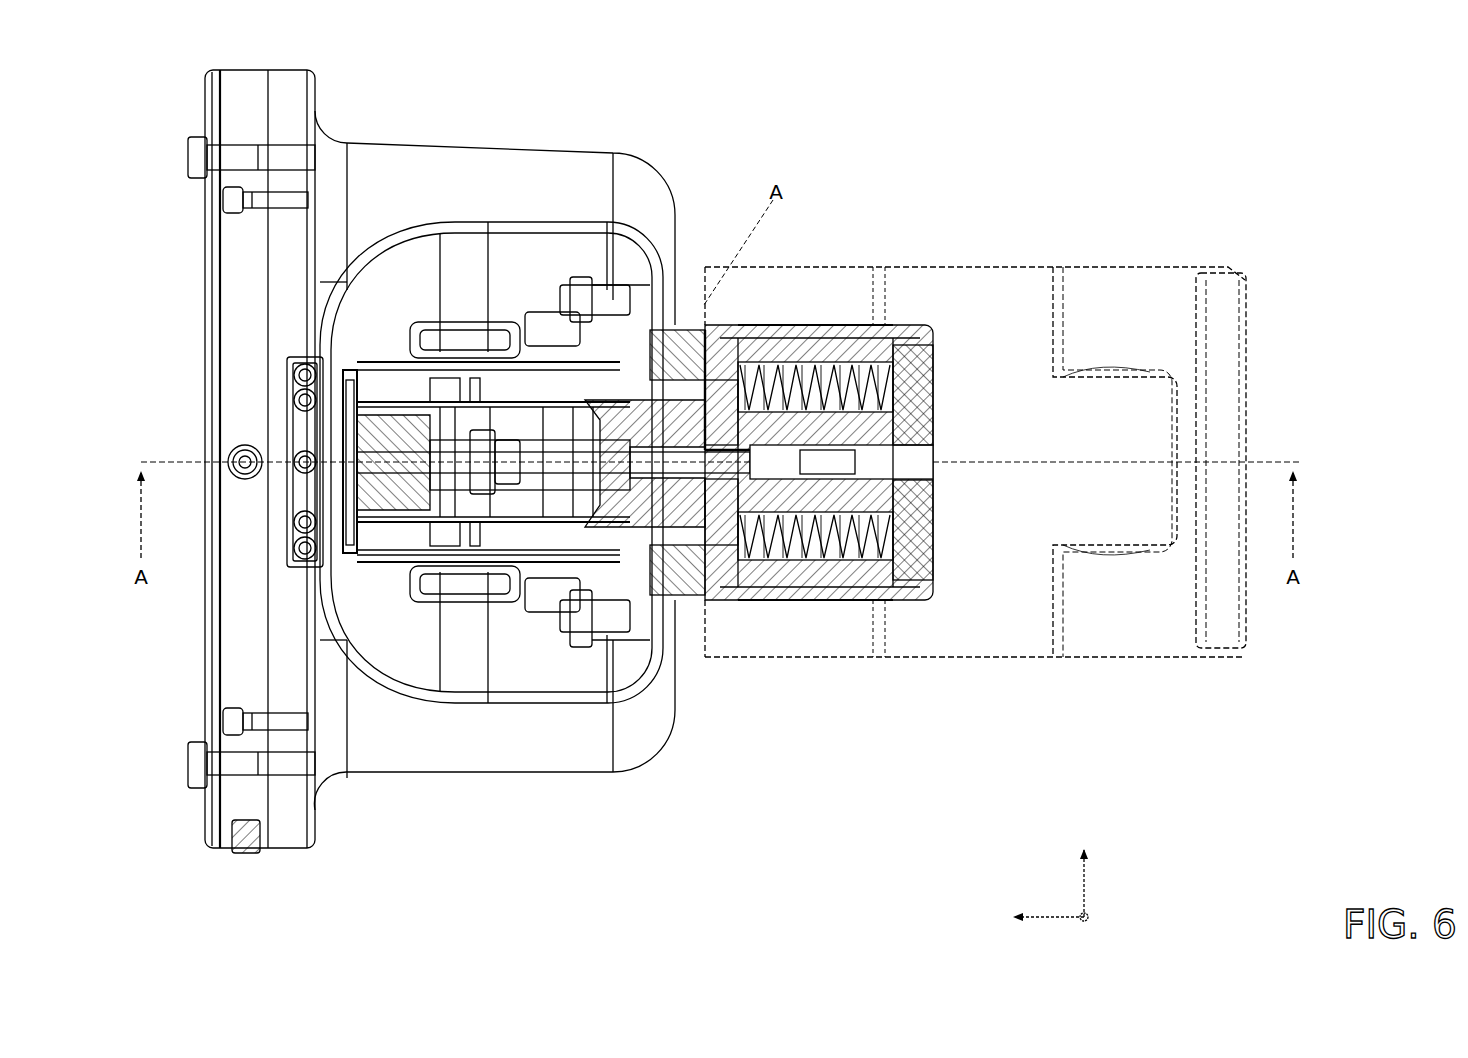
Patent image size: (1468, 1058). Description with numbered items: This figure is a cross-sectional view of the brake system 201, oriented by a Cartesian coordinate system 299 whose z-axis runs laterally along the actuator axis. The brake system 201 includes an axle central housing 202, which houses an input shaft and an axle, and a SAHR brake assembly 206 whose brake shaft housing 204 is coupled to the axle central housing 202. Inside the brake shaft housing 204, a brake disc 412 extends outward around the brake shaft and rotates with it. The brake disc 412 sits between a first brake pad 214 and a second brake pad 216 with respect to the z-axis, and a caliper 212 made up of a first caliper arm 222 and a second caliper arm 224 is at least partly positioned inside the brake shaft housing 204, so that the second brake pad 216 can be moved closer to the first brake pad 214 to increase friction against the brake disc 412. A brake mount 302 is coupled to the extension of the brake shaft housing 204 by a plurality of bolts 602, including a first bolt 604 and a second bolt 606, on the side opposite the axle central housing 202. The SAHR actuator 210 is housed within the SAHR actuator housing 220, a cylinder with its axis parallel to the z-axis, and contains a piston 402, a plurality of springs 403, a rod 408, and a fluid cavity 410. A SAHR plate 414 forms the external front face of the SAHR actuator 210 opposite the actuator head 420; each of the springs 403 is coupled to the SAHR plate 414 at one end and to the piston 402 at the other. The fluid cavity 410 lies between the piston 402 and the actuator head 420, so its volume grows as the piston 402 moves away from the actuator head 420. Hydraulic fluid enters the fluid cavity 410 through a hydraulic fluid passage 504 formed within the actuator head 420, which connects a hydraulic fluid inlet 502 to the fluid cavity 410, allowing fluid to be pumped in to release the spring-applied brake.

The brake system 201 is at (1158, 94).
The axle central housing 202 is at (1115, 640).
The brake shaft housing 204 is at (372, 770).
The SAHR brake assembly 206 is at (781, 94).
The SAHR actuator 210 is at (824, 216).
The caliper 212 is at (118, 491).
The first brake pad 214 is at (493, 495).
The second brake pad 216 is at (433, 428).
The SAHR actuator housing 220 is at (865, 330).
The first caliper arm 222 is at (502, 478).
The second caliper arm 224 is at (372, 450).
The Cartesian coordinate system 299 is at (1082, 812).
The brake mount 302 is at (388, 382).
The piston 402 is at (780, 487).
The plurality of springs 403 is at (848, 256).
The rod 408 is at (580, 620).
The fluid cavity 410 is at (727, 540).
The brake disc 412 is at (460, 650).
The SAHR plate 414 is at (917, 523).
The actuator head 420 is at (683, 505).
The hydraulic fluid inlet 502 is at (625, 415).
The hydraulic fluid passage 504 is at (660, 420).
The plurality of bolts 602 is at (682, 154).
The first bolt 604 is at (580, 303).
The second bolt 606 is at (547, 453).